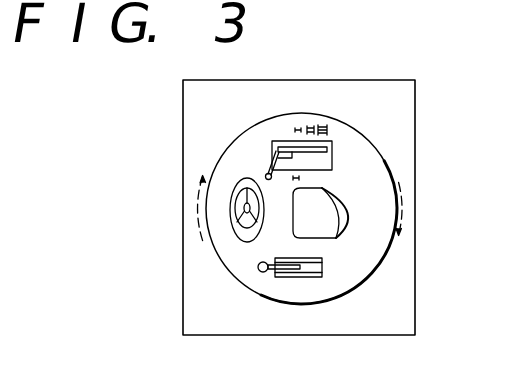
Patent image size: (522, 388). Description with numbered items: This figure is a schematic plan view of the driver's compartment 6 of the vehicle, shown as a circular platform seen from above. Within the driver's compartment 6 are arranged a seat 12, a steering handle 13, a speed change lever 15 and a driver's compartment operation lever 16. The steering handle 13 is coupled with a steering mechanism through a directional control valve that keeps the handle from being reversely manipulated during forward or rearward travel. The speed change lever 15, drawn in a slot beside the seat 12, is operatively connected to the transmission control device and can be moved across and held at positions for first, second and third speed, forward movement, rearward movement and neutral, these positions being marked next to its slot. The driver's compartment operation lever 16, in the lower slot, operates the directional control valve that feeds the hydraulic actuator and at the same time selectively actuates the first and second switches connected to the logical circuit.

The driver's compartment 6 is at (355, 142).
The seat 12 is at (339, 226).
The steering handle 13 is at (253, 226).
The speed change lever 15 is at (266, 174).
The driver's compartment operation lever 16 is at (261, 272).